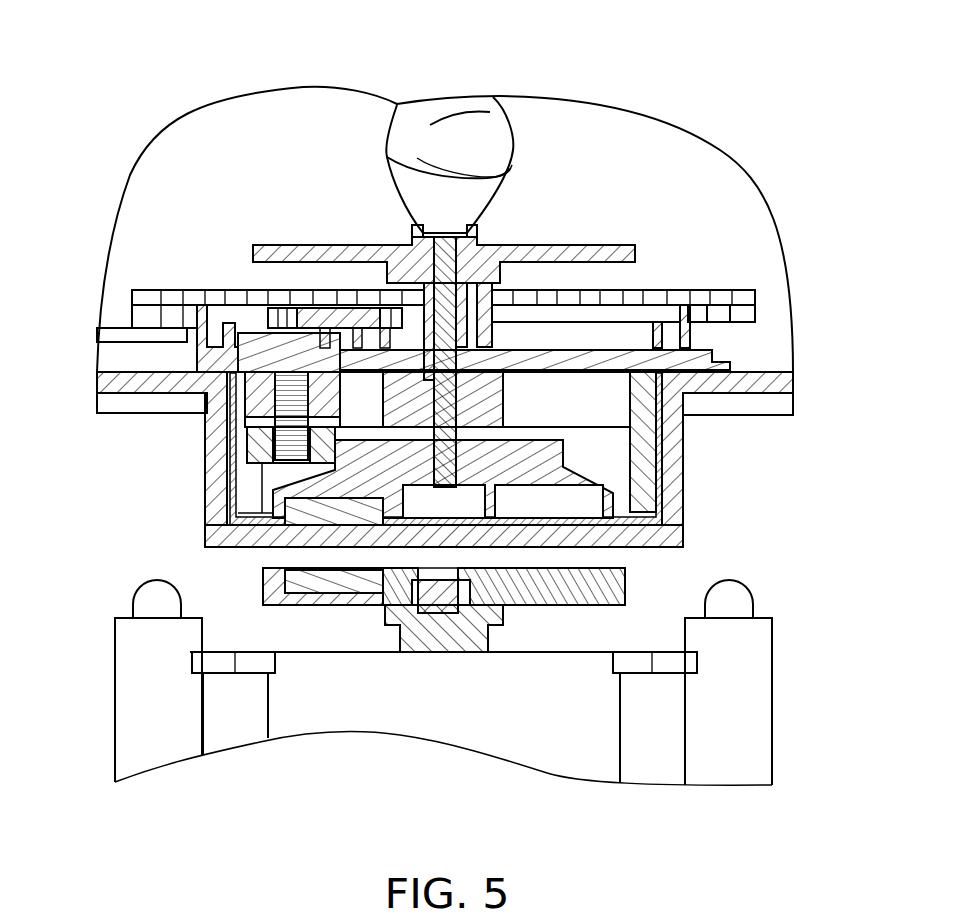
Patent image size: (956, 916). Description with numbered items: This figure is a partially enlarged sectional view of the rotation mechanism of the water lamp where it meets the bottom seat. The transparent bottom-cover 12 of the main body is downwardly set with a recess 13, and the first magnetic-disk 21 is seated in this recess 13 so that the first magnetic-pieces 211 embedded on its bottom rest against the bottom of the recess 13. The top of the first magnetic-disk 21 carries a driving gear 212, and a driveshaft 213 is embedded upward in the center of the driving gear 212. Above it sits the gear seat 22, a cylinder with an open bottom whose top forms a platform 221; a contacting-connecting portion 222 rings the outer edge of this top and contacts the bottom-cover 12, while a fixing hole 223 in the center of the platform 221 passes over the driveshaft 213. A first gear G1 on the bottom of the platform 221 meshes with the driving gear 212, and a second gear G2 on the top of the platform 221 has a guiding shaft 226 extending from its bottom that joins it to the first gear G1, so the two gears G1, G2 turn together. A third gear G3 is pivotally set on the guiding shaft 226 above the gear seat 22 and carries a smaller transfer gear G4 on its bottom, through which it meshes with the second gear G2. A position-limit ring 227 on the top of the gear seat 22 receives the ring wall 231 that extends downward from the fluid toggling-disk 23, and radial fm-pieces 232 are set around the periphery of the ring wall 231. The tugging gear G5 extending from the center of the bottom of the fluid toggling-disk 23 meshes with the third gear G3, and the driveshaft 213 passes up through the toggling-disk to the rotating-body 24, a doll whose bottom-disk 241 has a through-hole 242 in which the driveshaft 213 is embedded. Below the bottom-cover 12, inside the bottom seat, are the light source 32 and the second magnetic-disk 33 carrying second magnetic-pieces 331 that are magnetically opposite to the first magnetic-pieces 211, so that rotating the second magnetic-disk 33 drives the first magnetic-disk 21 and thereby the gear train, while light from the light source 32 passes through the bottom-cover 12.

The bottom-cover 12 is at (670, 477).
The recess 13 is at (645, 522).
The first magnetic-disk 21 is at (655, 540).
The gear seat 22 is at (640, 440).
The fluid toggling-disk 23 is at (668, 292).
The rotating-body 24 is at (513, 147).
The first magnetic-pieces 211 is at (270, 510).
The driving gear 212 is at (680, 386).
The driveshaft 213 is at (478, 258).
The platform 221 is at (655, 350).
The contacting-connecting portion 222 is at (704, 358).
The fixing hole 223 is at (483, 373).
The guiding shaft 226 is at (205, 413).
The position-limit ring 227 is at (199, 325).
The ring wall 231 is at (693, 337).
The radial fm-pieces 232 is at (738, 305).
The bottom-disk 241 is at (414, 300).
The through-hole 242 is at (385, 268).
The light source 32 is at (150, 597).
The second magnetic-disk 33 is at (627, 600).
The second magnetic-pieces 331 is at (265, 575).
The first gear G1 is at (243, 445).
The second gear G2 is at (200, 355).
The third gear G3 is at (285, 293).
The transfer gear G4 is at (322, 325).
The tugging gear G5 is at (348, 328).